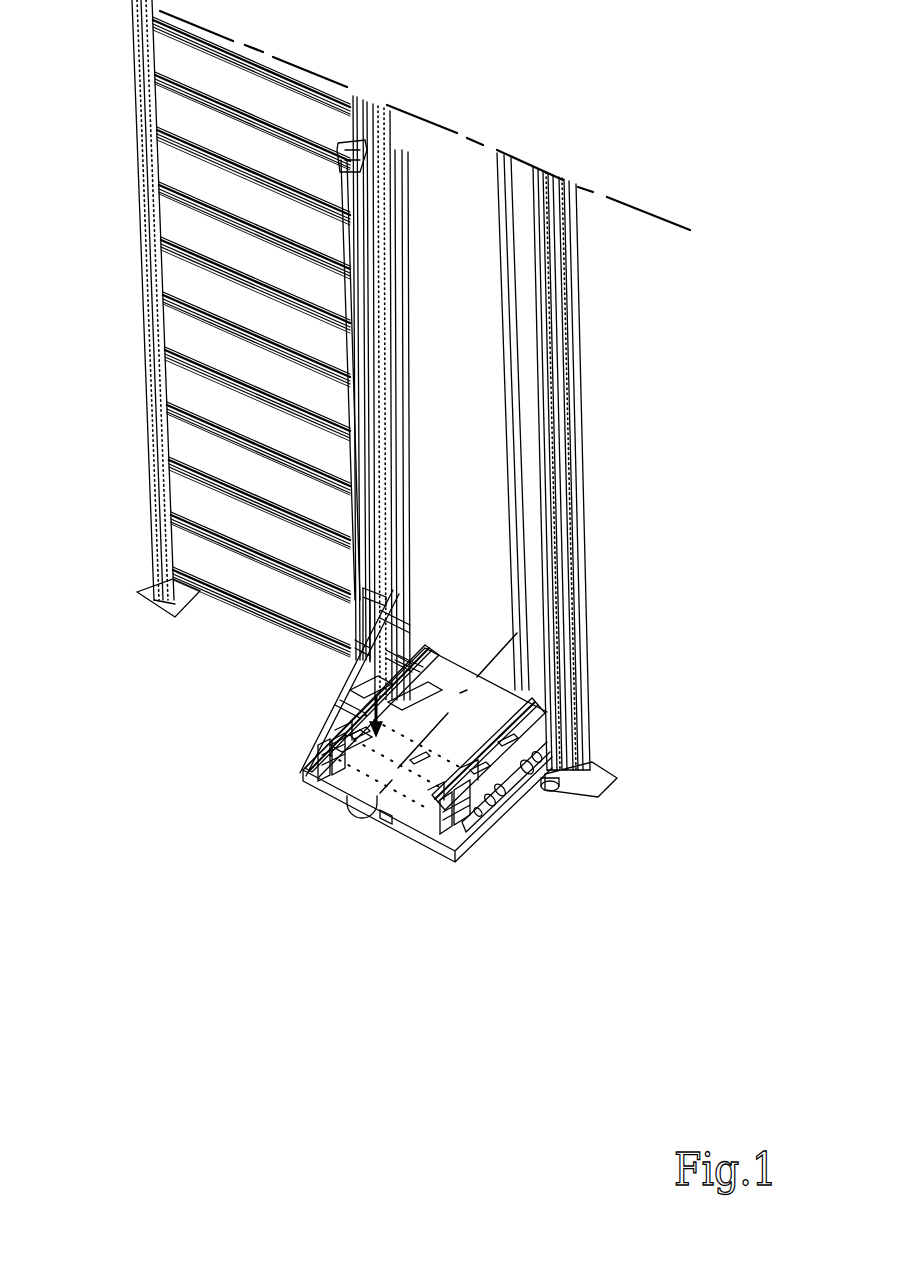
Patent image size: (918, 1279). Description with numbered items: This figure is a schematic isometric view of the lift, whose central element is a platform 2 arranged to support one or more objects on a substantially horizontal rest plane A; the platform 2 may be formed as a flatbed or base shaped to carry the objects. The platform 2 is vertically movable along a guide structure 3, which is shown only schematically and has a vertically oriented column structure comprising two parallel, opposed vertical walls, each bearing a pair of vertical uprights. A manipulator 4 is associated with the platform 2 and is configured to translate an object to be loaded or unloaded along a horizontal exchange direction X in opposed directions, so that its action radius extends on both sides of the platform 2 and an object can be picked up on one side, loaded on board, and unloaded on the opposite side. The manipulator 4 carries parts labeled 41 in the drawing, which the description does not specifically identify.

The platform 2 is at (383, 757).
The guide structure 3 is at (540, 583).
The manipulator 4 is at (425, 679).
The sliding blocks 41 is at (350, 768).
The rest plane A is at (405, 733).
The exchange direction X is at (370, 803).